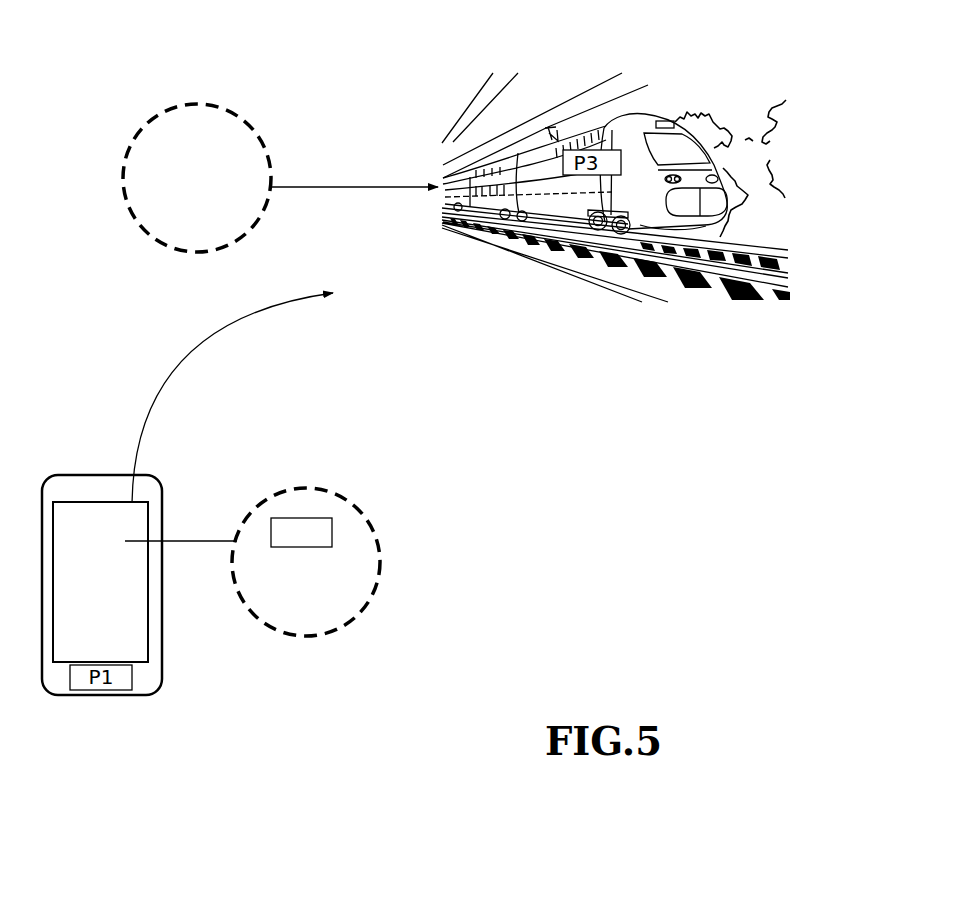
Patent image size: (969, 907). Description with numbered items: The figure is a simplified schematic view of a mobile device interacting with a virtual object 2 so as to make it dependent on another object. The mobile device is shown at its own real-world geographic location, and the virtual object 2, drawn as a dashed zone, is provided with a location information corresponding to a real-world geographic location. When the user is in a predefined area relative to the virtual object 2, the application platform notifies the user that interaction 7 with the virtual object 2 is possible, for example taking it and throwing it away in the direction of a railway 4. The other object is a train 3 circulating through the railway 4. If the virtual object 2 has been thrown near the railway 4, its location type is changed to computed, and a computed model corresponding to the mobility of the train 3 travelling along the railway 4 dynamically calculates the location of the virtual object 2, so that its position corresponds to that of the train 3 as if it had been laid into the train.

The virtual object 2 is at (252, 118).
The train 3 is at (648, 90).
The railway 4 is at (763, 240).
The interaction 7 is at (332, 165).